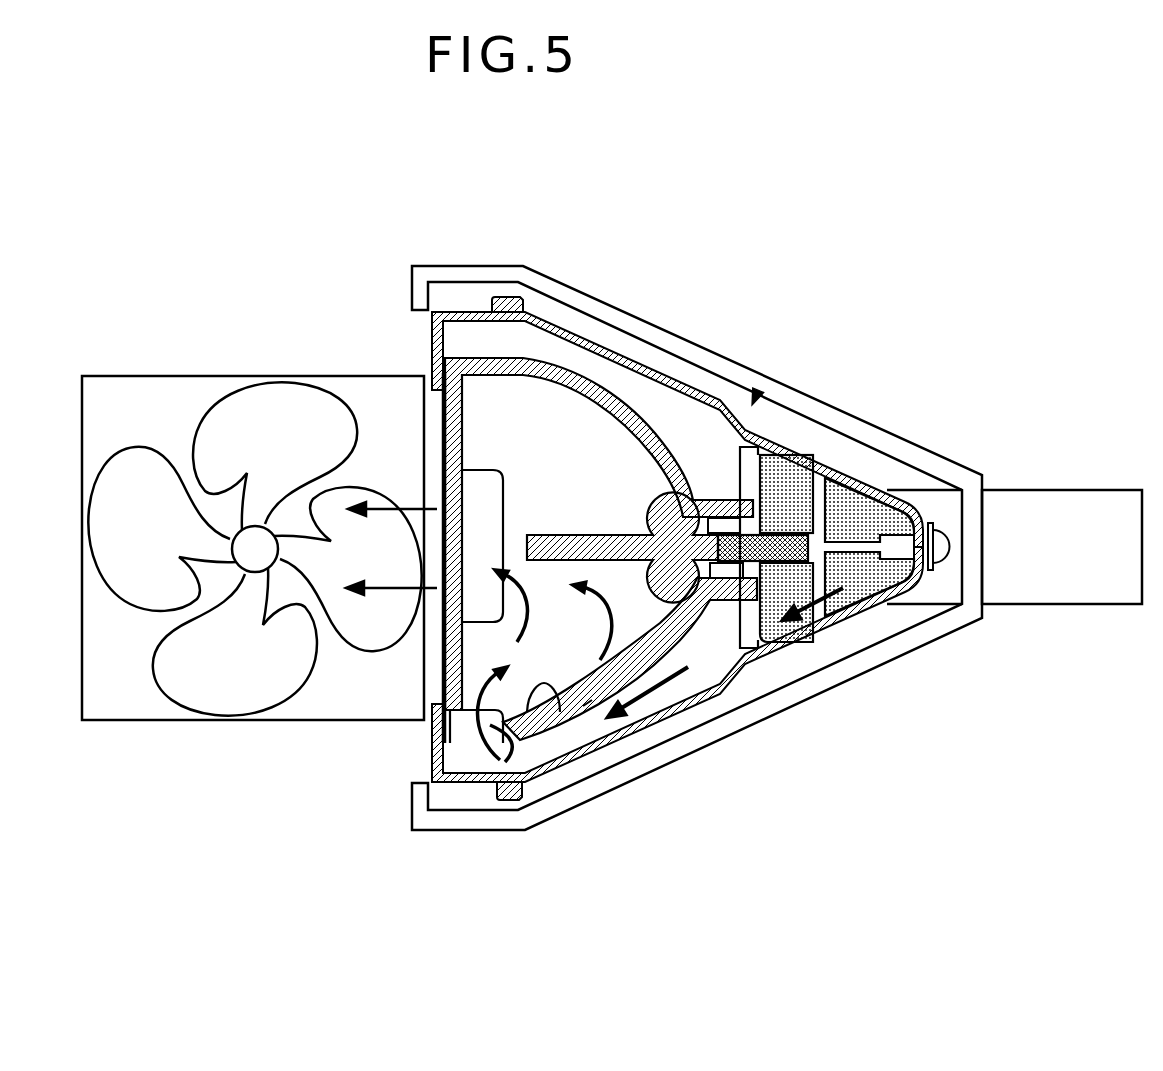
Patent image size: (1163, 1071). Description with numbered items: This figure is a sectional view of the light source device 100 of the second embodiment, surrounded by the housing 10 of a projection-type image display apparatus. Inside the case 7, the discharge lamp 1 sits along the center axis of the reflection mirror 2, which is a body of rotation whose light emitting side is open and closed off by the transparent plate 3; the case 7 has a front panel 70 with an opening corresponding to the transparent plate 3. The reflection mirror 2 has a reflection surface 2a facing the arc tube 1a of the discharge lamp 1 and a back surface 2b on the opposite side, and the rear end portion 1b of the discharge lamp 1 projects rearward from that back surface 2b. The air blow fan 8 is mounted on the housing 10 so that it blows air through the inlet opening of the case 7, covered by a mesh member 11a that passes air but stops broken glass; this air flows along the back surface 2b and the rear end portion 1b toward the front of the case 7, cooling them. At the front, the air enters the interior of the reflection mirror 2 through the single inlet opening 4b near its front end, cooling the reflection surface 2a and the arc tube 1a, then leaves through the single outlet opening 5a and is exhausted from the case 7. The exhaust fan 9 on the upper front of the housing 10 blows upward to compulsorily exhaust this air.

The discharge lamp 1 is at (623, 560).
The arc tube 1a is at (690, 570).
The rear end portion 1b is at (773, 552).
The reflection mirror 2 is at (633, 418).
The reflection surface 2a is at (558, 712).
The back surface 2b is at (587, 703).
The transparent plate 3 is at (437, 420).
The inlet opening 4b is at (512, 727).
The outlet opening 5a is at (478, 588).
The case 7 is at (853, 627).
The air blow fan 8 is at (1090, 607).
The exhaust fan 9 is at (180, 375).
The housing 10 is at (930, 450).
The mesh member 11a is at (862, 505).
The front panel 70 is at (427, 328).
The light source device 100 is at (756, 397).